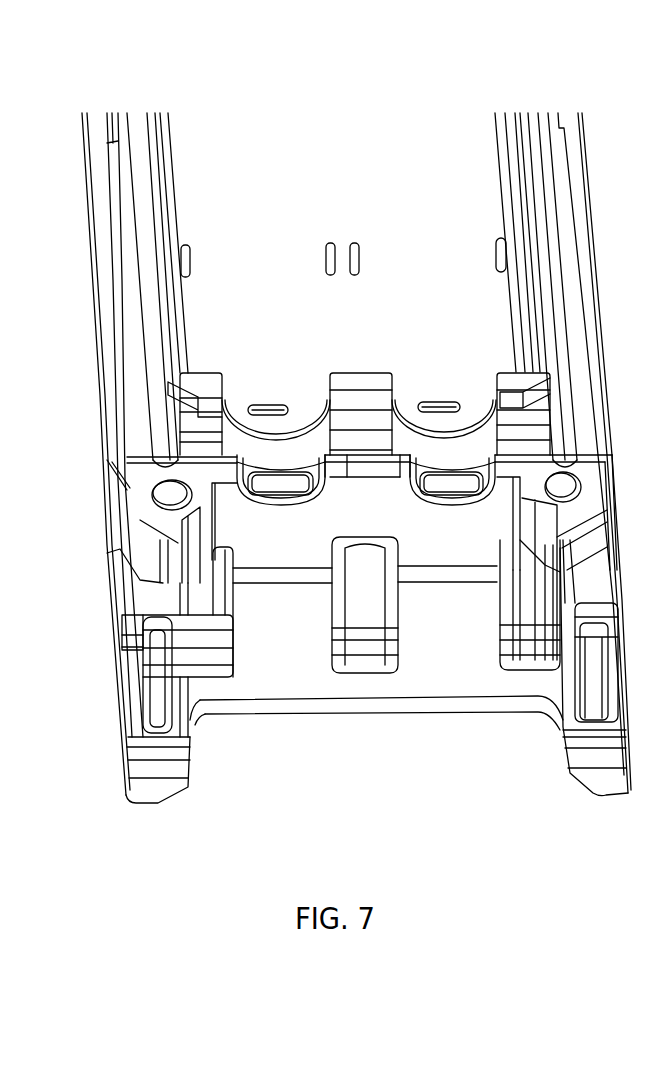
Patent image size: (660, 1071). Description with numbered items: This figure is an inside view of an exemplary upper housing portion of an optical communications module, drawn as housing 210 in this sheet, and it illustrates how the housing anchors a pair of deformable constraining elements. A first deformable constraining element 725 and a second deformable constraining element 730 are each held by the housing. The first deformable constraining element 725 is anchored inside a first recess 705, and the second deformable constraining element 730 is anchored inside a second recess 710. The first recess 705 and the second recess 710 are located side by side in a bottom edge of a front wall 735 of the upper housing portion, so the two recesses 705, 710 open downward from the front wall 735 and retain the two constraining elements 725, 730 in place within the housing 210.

The housing 210 is at (102, 358).
The first recess 705 is at (285, 497).
The second recess 710 is at (447, 497).
The first deformable constraining element 725 is at (277, 483).
The second deformable constraining element 730 is at (433, 482).
The front wall 735 is at (397, 515).